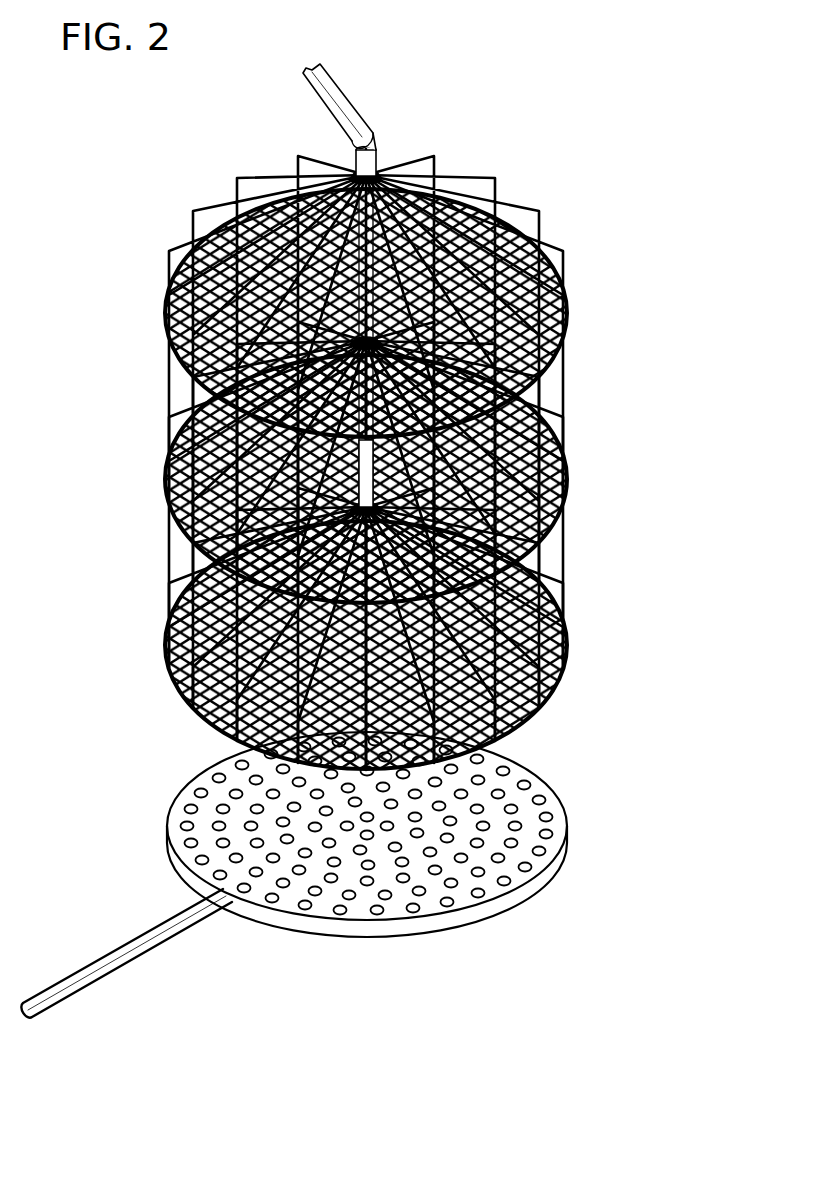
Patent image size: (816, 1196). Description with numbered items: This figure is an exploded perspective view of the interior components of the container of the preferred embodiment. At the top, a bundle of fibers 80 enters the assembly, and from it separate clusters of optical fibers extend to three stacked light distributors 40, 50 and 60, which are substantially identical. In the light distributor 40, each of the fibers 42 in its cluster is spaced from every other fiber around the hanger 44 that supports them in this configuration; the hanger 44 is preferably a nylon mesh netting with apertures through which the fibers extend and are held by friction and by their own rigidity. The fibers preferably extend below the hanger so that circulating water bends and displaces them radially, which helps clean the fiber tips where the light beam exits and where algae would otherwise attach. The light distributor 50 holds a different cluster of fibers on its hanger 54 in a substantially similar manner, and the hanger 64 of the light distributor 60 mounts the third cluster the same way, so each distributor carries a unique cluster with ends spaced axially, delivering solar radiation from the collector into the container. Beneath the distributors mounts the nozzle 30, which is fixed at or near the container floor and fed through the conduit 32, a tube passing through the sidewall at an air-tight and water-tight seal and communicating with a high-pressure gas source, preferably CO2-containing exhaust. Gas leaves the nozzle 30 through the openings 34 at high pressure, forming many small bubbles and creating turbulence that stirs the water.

The nozzle 30 is at (339, 875).
The conduit 32 is at (107, 958).
The openings 34 is at (190, 790).
The light distributor 40 is at (340, 376).
The fibers 42 is at (508, 213).
The hanger 44 is at (165, 343).
The light distributor 50 is at (423, 542).
The hanger 54 is at (530, 548).
The light distributor 60 is at (318, 625).
The hanger 64 is at (183, 703).
The bundle of fibers 80 is at (347, 112).